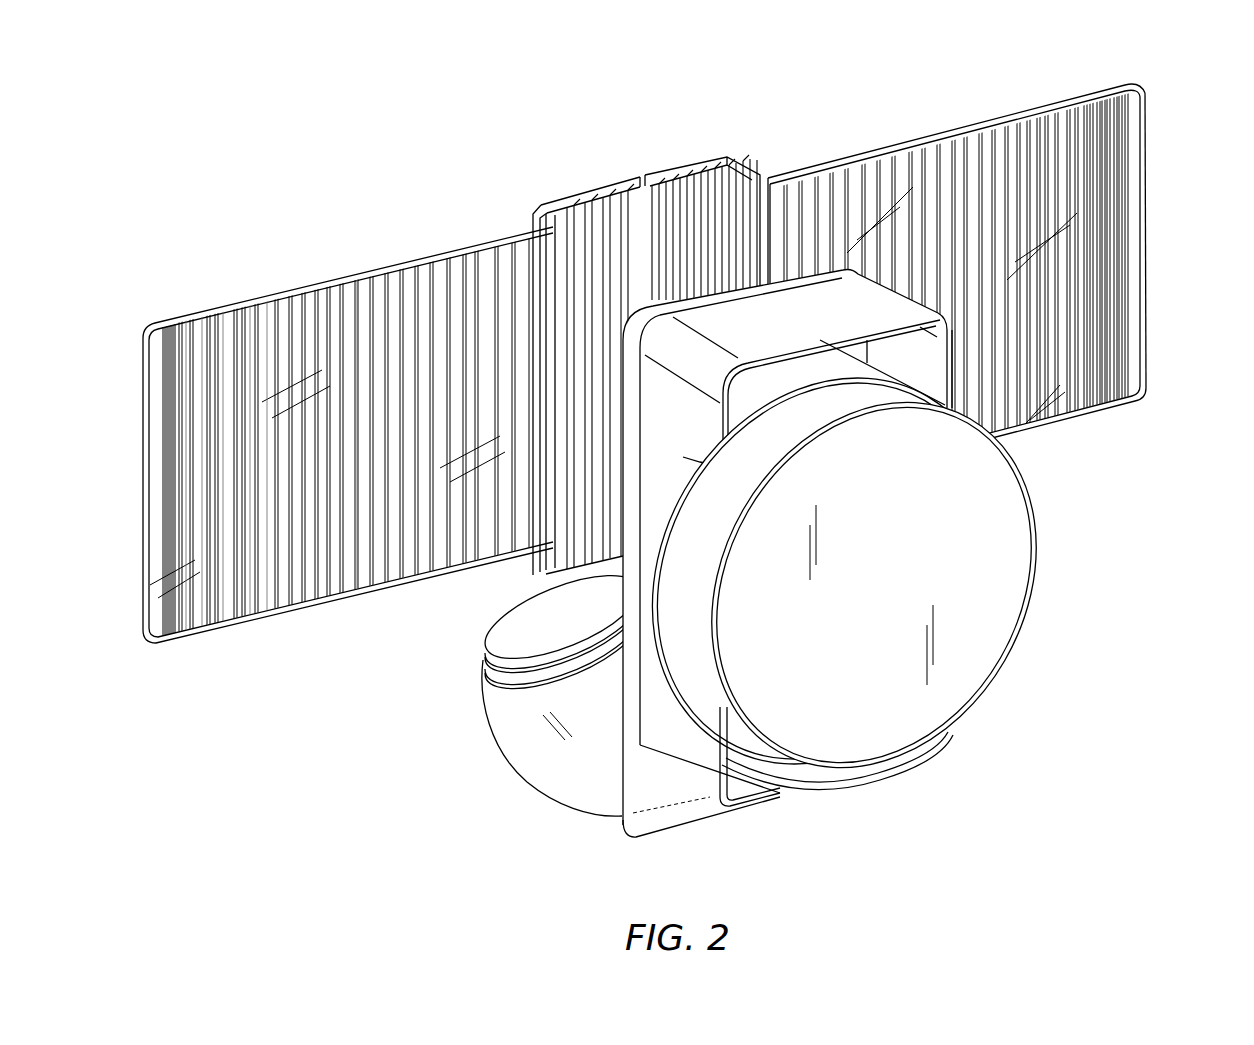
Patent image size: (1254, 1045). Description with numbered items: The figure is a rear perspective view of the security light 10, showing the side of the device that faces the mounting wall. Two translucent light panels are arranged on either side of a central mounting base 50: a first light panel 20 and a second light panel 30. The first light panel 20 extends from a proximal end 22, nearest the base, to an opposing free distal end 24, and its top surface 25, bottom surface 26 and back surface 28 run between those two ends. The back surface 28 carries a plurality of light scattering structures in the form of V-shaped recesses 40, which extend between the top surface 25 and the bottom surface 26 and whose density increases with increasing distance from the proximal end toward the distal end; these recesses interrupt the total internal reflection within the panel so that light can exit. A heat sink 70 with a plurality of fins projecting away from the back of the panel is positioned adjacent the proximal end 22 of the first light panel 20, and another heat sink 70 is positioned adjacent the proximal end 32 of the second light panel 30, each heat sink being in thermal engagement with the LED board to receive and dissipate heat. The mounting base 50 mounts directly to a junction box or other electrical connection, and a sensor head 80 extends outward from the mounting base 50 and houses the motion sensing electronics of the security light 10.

The security light 10 is at (685, 461).
The first light panel 20 is at (999, 267).
The proximal end 22 is at (772, 165).
The distal end 24 is at (999, 267).
The top surface 25 is at (1043, 105).
The bottom surface 26 is at (1090, 413).
The back surface 28 is at (1145, 380).
The second light panel 30 is at (338, 222).
The proximal end 32 is at (512, 228).
The V-shaped recesses 40 is at (355, 555).
The mounting base 50 is at (710, 685).
The heat sink 70 is at (598, 196).
The sensor head 80 is at (530, 752).